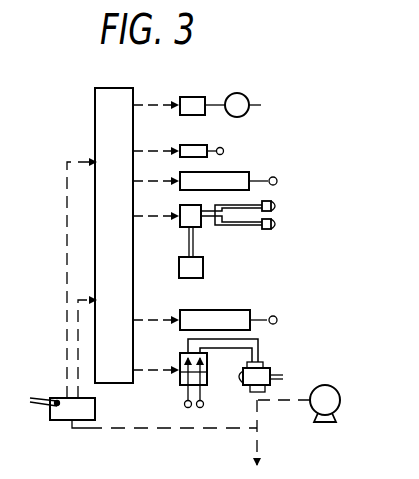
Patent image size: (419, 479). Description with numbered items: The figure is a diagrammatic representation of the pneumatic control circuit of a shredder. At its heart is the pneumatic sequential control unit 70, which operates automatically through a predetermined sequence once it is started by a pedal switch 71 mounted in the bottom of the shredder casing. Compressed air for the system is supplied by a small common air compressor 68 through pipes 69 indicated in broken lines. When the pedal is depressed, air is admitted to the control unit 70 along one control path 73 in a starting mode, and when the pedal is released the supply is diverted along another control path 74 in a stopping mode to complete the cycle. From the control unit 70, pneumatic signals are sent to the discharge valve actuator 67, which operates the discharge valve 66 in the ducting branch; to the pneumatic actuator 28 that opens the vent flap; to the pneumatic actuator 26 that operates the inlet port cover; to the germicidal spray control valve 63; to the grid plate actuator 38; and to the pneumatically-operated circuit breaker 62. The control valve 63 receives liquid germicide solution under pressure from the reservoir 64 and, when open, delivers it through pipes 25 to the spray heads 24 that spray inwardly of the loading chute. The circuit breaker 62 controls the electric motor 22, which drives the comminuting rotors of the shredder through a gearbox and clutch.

The pneumatic sequential control unit 70 is at (123, 235).
The discharge valve actuator 67 is at (196, 96).
The discharge valve 66 is at (247, 97).
The pneumatic actuator 28 is at (207, 145).
The pneumatic actuator 26 is at (240, 172).
The pneumatic control valve 63 is at (180, 229).
The pipes 25 is at (210, 223).
The spray heads 24 is at (279, 204).
The reservoir 64 is at (185, 270).
The grid plate actuator 38 is at (240, 300).
The pneumatically-operated circuit breaker 62 is at (178, 379).
The electric motor 22 is at (262, 375).
The air compressor 68 is at (341, 400).
The pipes 69 is at (186, 428).
The pedal switch 71 is at (73, 408).
The control path 73 is at (67, 248).
The control path 74 is at (78, 326).